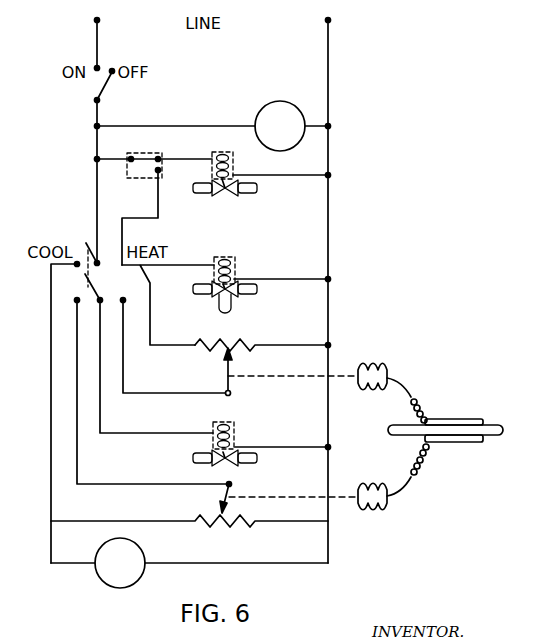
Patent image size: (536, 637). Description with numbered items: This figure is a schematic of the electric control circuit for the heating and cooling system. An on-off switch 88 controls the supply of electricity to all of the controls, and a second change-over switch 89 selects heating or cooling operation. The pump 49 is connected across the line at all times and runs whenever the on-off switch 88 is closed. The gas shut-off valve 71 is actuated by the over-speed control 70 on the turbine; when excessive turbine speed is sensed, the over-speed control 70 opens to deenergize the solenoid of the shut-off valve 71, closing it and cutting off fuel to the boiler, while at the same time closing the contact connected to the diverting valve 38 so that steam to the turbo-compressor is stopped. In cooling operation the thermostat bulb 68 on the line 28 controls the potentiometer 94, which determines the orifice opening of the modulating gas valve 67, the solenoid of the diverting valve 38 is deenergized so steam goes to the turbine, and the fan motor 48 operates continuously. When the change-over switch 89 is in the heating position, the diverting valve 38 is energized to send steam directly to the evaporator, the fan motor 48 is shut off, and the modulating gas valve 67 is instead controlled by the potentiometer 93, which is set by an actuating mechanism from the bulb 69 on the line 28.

The on-off switch 88 is at (106, 94).
The pump 49 is at (270, 136).
The over-speed control 70 is at (143, 182).
The gas shut-off valve 71 is at (260, 185).
The change-over switch 89 is at (85, 274).
The diverting valve 38 is at (232, 290).
The potentiometer 93 is at (238, 338).
The modulating gas valve 67 is at (222, 463).
The potentiometer 94 is at (240, 523).
The fan motor 48 is at (110, 573).
The bulb 69 is at (440, 421).
The line 28 is at (495, 427).
The thermostat bulb 68 is at (446, 441).